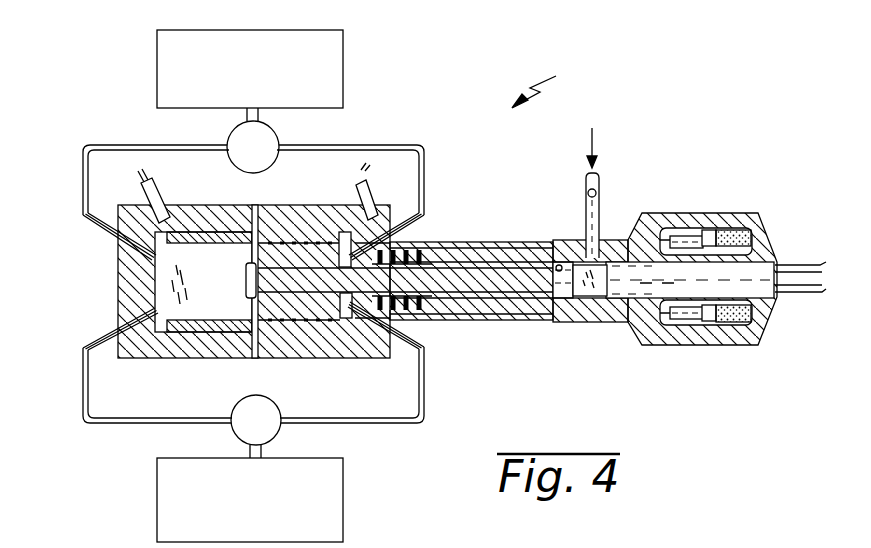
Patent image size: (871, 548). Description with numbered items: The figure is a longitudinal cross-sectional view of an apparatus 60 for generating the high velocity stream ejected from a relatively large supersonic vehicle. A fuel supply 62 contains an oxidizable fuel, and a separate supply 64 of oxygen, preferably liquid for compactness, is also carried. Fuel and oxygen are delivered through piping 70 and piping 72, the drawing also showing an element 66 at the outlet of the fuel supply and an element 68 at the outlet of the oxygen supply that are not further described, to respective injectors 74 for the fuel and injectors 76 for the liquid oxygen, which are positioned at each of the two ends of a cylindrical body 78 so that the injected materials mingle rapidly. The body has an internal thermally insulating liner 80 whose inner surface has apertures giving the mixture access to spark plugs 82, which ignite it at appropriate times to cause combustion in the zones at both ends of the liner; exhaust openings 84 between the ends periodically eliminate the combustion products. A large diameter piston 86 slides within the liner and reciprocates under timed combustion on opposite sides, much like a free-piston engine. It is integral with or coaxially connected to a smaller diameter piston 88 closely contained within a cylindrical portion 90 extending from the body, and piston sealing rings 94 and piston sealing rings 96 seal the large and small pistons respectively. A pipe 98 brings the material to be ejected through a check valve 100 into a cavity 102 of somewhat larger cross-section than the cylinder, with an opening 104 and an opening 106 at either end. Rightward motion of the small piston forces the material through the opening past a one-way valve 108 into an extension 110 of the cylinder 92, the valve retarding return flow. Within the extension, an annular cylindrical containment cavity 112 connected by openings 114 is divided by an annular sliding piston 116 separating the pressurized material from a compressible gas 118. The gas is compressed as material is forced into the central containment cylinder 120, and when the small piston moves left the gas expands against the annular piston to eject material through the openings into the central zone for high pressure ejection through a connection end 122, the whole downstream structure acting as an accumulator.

The apparatus 60 is at (547, 82).
The fuel supply 62 is at (336, 66).
The supply of oxygen 64 is at (336, 506).
The fuel valve 66 is at (276, 136).
The oxygen valve 68 is at (272, 407).
The piping 70 is at (100, 146).
The piping 72 is at (105, 425).
The injectors 74 is at (112, 243).
The injectors 76 is at (112, 330).
The cylindrical body 78 is at (168, 360).
The thermally insulating liner 80 is at (203, 230).
The spark plugs 82 is at (143, 193).
The exhaust openings 84 is at (258, 208).
The large diameter piston 86 is at (272, 257).
The smaller diameter piston 88 is at (490, 300).
The cylindrical portion 90 is at (500, 267).
The cylinder 92 is at (527, 320).
The piston sealing rings 94 is at (328, 330).
The piston sealing rings 96 is at (452, 250).
The pipe 98 is at (597, 168).
The check valve 100 is at (604, 197).
The cavity 102 is at (581, 258).
The opening 104 is at (560, 263).
The opening 106 is at (618, 300).
The one-way valve 108 is at (598, 272).
The extension 110 is at (745, 346).
The annular cylindrical containment cavity 112 is at (703, 243).
The openings 114 is at (655, 245).
The annular sliding piston 116 is at (735, 237).
The compressible gas 118 is at (748, 242).
The central containment cylinder 120 is at (815, 266).
The connection end 122 is at (755, 287).